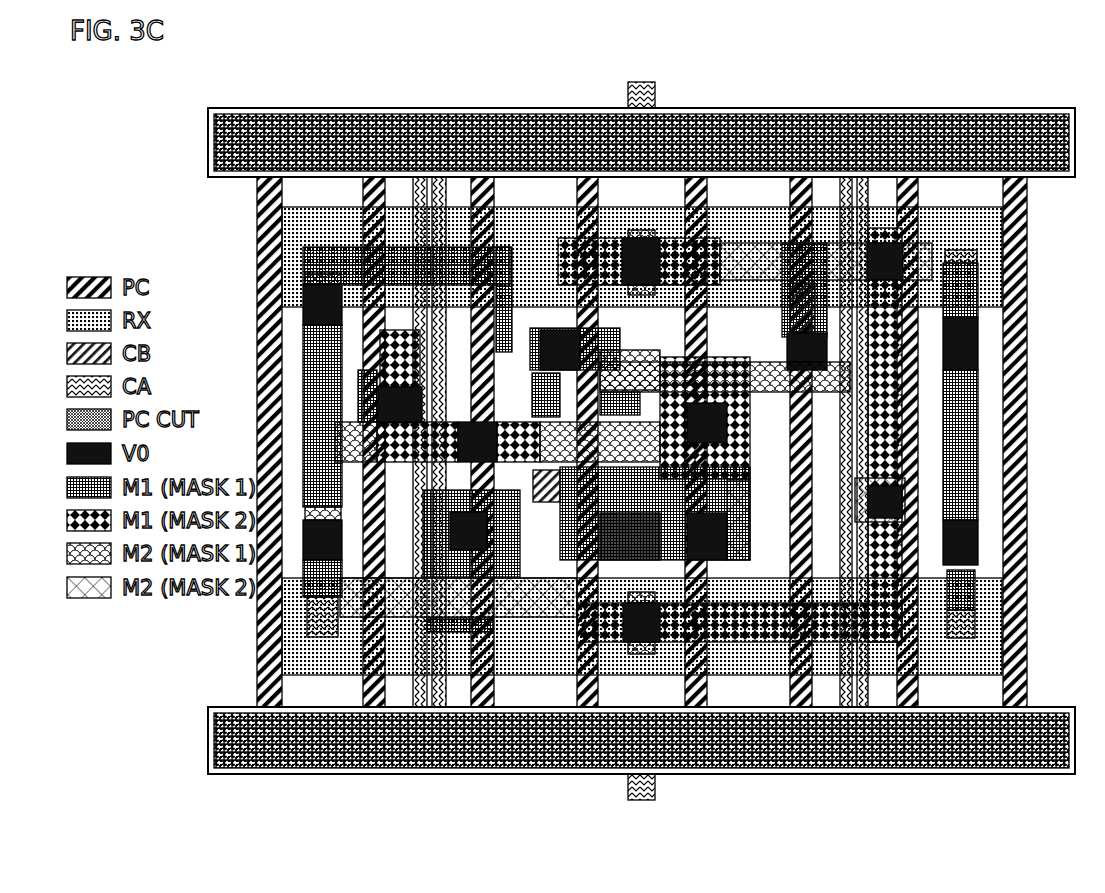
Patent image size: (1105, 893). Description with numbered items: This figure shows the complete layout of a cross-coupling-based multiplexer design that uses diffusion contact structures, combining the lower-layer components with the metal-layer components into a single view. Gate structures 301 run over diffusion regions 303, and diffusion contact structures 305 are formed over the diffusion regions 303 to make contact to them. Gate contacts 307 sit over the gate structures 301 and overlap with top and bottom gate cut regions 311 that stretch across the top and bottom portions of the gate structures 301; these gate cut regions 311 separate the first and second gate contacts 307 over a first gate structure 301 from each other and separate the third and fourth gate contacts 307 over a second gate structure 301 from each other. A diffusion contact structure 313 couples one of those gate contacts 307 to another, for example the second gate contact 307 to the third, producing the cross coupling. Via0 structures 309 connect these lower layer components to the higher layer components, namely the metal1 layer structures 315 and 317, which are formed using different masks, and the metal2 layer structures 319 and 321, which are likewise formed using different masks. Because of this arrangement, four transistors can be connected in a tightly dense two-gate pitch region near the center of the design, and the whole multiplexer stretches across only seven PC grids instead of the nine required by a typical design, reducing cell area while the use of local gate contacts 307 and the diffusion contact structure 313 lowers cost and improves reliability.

The gate structure 301 is at (1030, 266).
The diffusion region 303 is at (990, 225).
The diffusion contact structure 305 is at (658, 98).
The gate contact 307 is at (423, 384).
The via0 structure 309 is at (985, 338).
The gate cut region 311 is at (529, 406).
The diffusion contact structure 313 is at (621, 466).
The metal1 layer structure 315 is at (607, 443).
The metal1 layer structure 317 is at (558, 238).
The metal2 layer structure 319 is at (213, 176).
The metal2 layer structure 321 is at (770, 242).